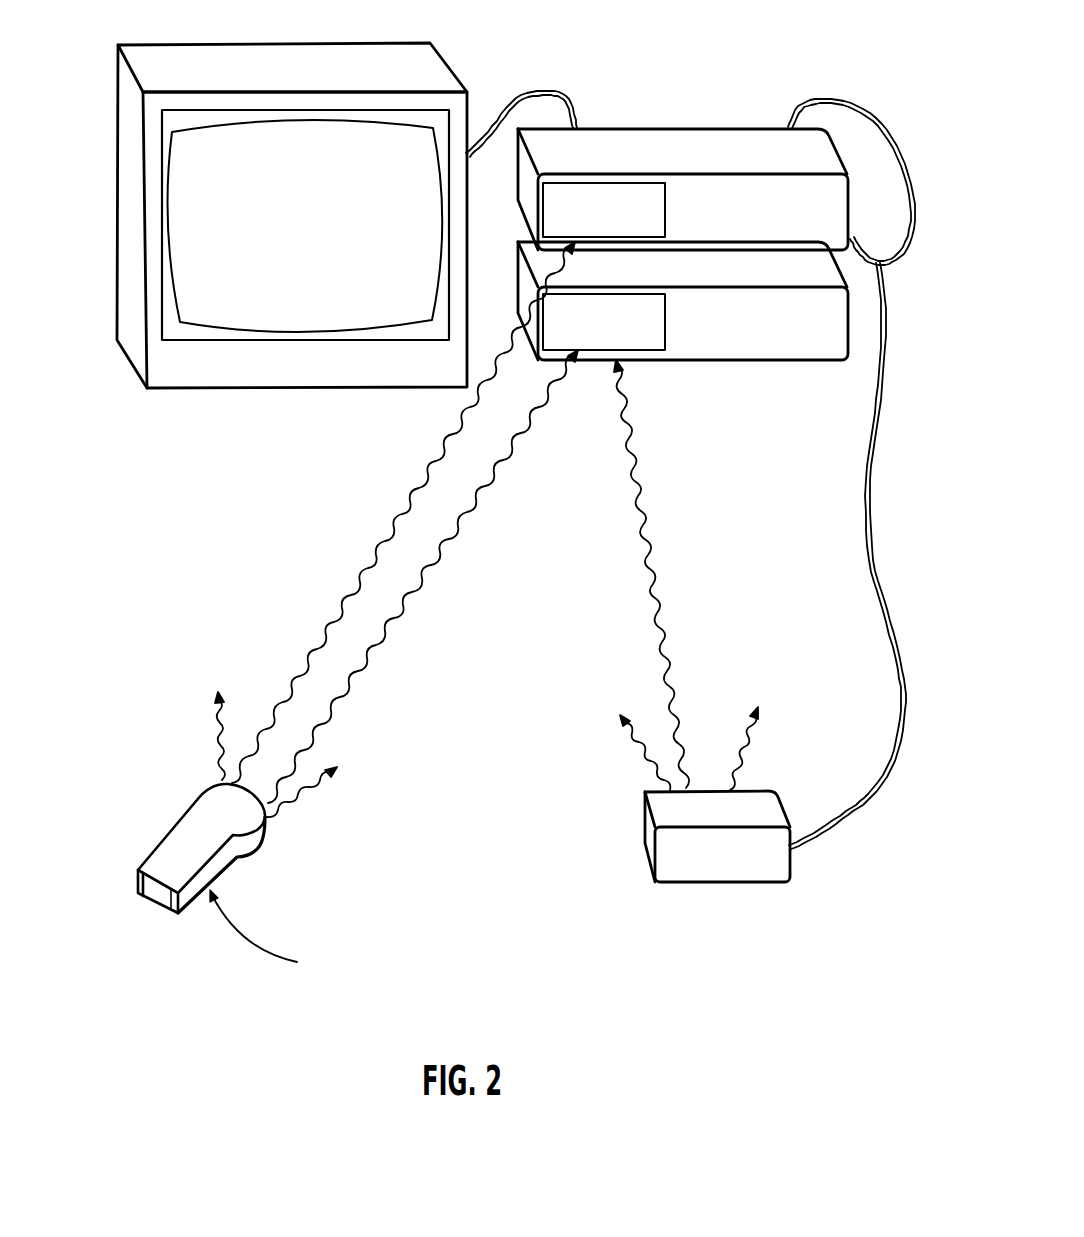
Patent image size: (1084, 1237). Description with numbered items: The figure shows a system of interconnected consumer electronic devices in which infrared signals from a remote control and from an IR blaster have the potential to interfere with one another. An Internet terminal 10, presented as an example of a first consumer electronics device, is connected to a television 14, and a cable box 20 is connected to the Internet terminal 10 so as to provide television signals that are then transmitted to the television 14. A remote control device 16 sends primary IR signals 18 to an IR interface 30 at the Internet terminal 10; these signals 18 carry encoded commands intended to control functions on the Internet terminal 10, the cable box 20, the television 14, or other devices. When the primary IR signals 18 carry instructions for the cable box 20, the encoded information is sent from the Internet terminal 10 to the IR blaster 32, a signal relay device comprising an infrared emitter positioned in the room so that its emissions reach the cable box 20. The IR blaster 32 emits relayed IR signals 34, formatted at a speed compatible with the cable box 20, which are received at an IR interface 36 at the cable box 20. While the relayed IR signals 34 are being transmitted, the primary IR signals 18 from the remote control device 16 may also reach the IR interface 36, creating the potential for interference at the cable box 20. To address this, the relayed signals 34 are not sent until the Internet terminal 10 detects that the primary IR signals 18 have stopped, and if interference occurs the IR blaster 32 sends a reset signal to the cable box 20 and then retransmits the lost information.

The Internet terminal 10 is at (733, 135).
The television 14 is at (250, 53).
The remote control device 16 is at (188, 830).
The primary IR signals 18 is at (337, 622).
The cable box 20 is at (793, 347).
The IR interface 30 is at (633, 190).
The IR blaster 32 is at (663, 813).
The relayed IR signals 34 is at (663, 615).
The IR interface 36 is at (602, 347).